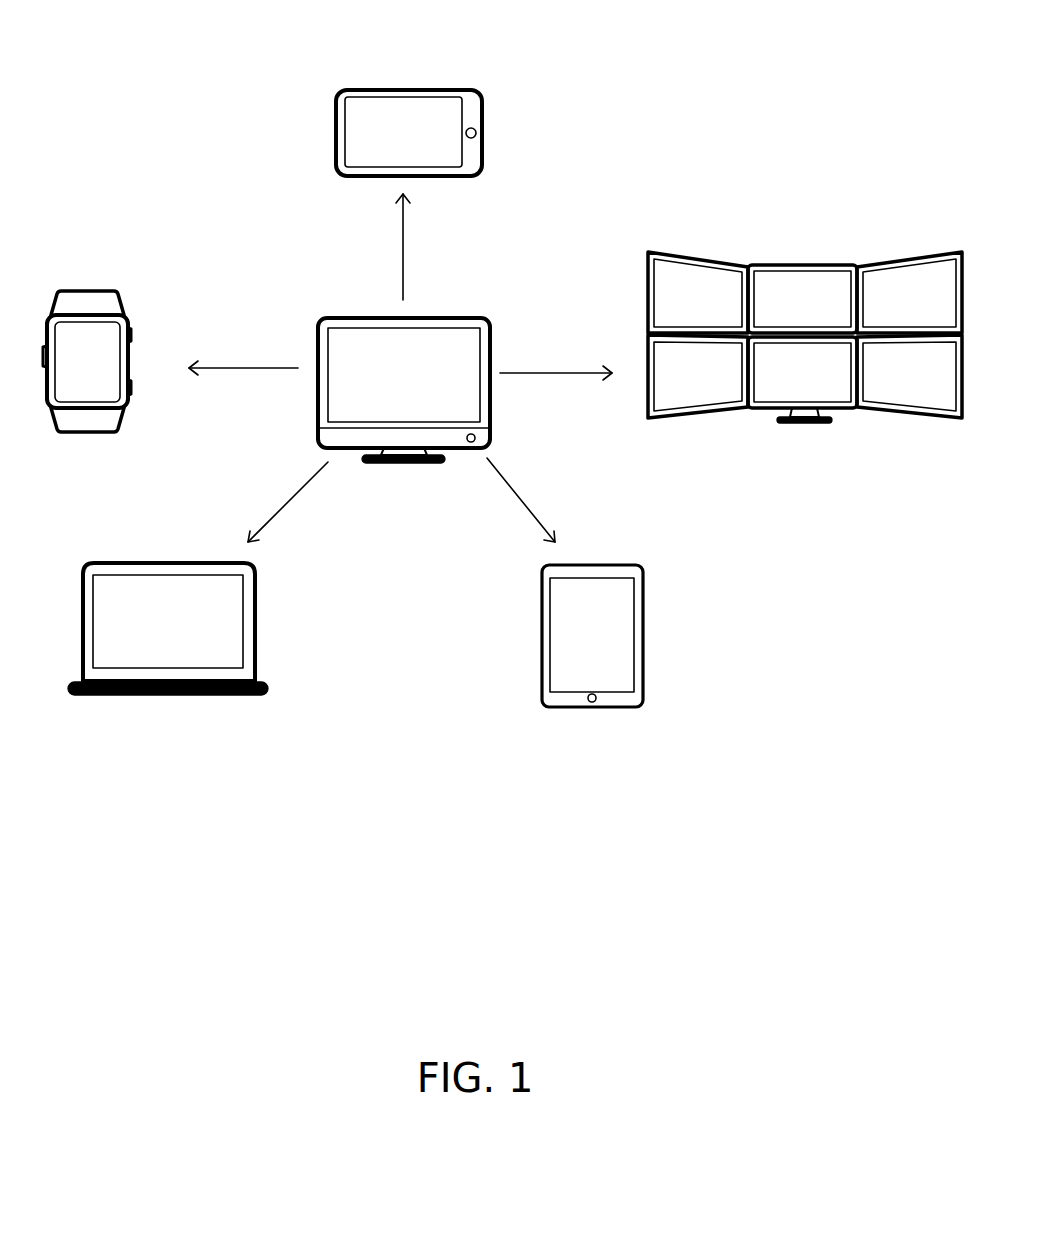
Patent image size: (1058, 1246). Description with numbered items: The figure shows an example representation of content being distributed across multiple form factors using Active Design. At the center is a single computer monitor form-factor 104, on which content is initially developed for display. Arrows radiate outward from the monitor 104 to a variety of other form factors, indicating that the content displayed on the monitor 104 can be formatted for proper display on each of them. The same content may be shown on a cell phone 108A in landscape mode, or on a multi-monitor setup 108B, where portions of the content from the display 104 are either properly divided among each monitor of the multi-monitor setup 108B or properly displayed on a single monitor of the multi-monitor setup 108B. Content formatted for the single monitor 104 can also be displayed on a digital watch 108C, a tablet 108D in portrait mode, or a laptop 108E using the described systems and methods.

The single computer monitor form-factor 104 is at (482, 317).
The cell phone 108A is at (399, 89).
The multi-monitor setup 108B is at (810, 265).
The digital watch 108C is at (82, 292).
The tablet 108D is at (609, 708).
The laptop 108E is at (186, 697).